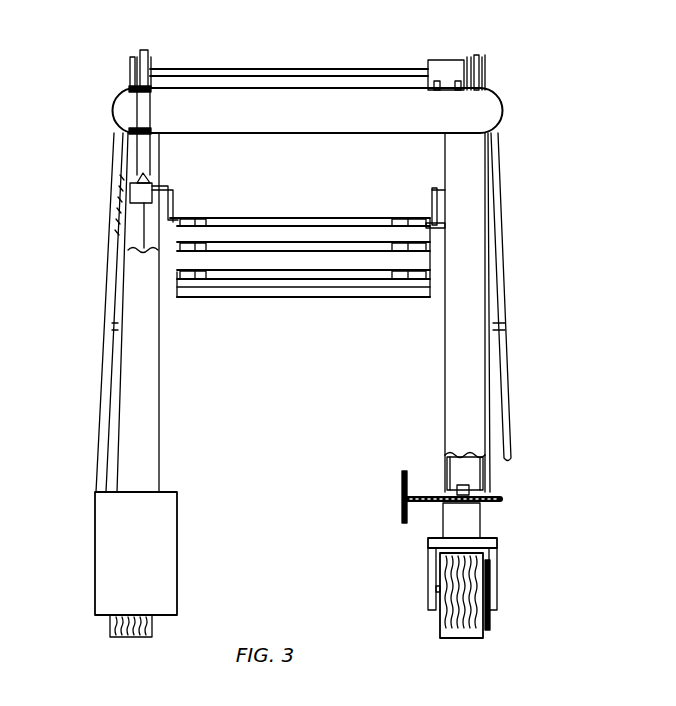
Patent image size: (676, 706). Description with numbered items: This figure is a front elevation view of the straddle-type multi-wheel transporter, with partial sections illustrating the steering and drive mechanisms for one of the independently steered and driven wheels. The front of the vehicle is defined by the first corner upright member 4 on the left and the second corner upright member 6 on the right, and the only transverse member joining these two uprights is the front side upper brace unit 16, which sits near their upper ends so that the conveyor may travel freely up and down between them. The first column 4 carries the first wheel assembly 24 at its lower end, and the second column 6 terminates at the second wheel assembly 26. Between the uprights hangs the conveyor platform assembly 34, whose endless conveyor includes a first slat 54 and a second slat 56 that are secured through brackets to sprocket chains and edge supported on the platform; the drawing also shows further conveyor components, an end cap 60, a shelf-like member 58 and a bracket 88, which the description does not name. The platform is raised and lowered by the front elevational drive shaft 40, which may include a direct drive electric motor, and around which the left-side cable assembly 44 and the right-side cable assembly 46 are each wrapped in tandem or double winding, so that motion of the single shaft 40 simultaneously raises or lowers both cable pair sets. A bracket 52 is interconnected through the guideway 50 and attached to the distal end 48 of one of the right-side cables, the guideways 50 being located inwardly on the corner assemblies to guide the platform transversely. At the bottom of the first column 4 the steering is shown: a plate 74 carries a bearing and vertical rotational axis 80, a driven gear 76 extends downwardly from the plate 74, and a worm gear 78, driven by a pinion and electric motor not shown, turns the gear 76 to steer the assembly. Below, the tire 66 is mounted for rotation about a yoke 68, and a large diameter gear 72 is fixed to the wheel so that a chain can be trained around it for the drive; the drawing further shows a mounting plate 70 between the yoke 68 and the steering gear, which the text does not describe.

The first corner upright member 4 is at (478, 358).
The second corner upright member 6 is at (128, 386).
The front side upper brace unit 16 is at (318, 118).
The first wheel assembly 24 is at (490, 592).
The second wheel assembly 26 is at (100, 541).
The conveyor platform assembly 34 is at (432, 258).
The front elevational drive shaft 40 is at (224, 70).
The left-side cable assembly 44 is at (479, 58).
The right-side cable assembly 46 is at (152, 57).
The cable distal end 48 is at (140, 185).
The guideway 50 is at (163, 250).
The bracket 52 is at (176, 205).
The first slat 54 is at (344, 236).
The second slat 56 is at (334, 264).
The shelf 58 is at (388, 284).
The bottom plate 60 is at (222, 276).
The tire 66 is at (462, 638).
The yoke 68 is at (428, 596).
The mounting plate 70 is at (426, 553).
The large diameter gear 72 is at (516, 613).
The plate 74 is at (487, 497).
The driven gear 76 is at (500, 500).
The worm gear 78 is at (408, 488).
The bearing and vertical rotational axis 80 is at (470, 456).
The bracket 88 is at (440, 226).